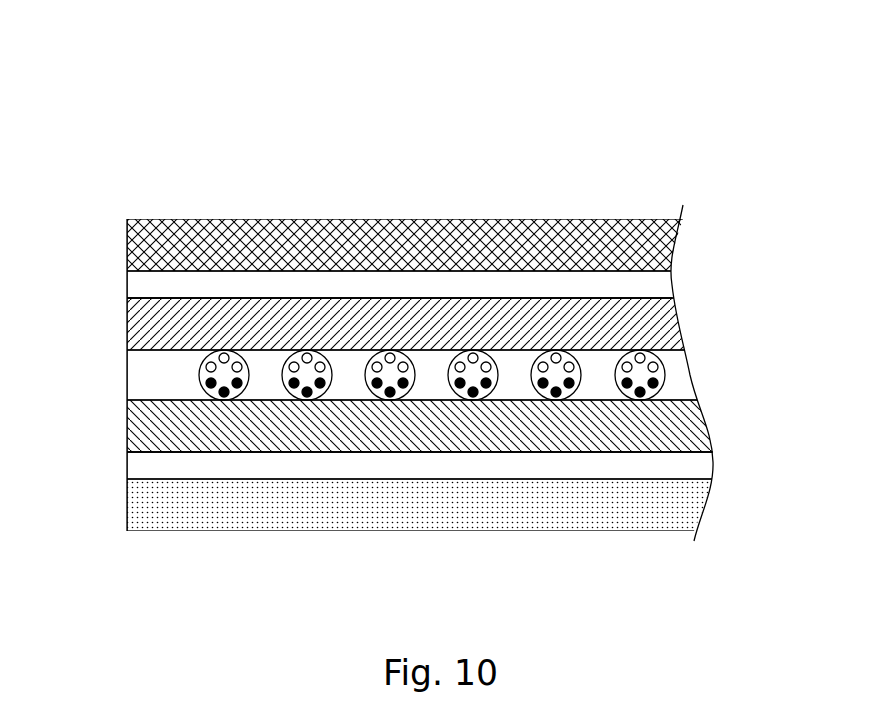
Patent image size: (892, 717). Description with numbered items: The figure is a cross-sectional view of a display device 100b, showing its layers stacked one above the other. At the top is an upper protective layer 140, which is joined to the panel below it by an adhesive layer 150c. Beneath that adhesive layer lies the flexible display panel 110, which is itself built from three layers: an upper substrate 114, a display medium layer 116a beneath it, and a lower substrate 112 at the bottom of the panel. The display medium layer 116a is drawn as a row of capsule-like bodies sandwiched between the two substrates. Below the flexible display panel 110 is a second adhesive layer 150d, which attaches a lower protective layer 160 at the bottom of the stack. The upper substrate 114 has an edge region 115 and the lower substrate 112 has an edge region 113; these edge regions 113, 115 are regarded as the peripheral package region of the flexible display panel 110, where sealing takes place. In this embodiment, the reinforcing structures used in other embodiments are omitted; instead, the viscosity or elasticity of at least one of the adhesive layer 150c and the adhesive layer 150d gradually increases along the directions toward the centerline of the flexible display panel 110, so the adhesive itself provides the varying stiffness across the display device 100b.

The display device 100b is at (121, 104).
The upper protective layer 140 is at (453, 236).
The adhesive layer 150c is at (545, 288).
The upper substrate 114 is at (670, 327).
The display medium layer 116a is at (682, 377).
The lower substrate 112 is at (449, 426).
The flexible display panel 110 is at (480, 375).
The adhesive layer 150d is at (545, 463).
The lower protective layer 160 is at (453, 510).
The edge region 115 is at (152, 326).
The edge region 113 is at (152, 433).